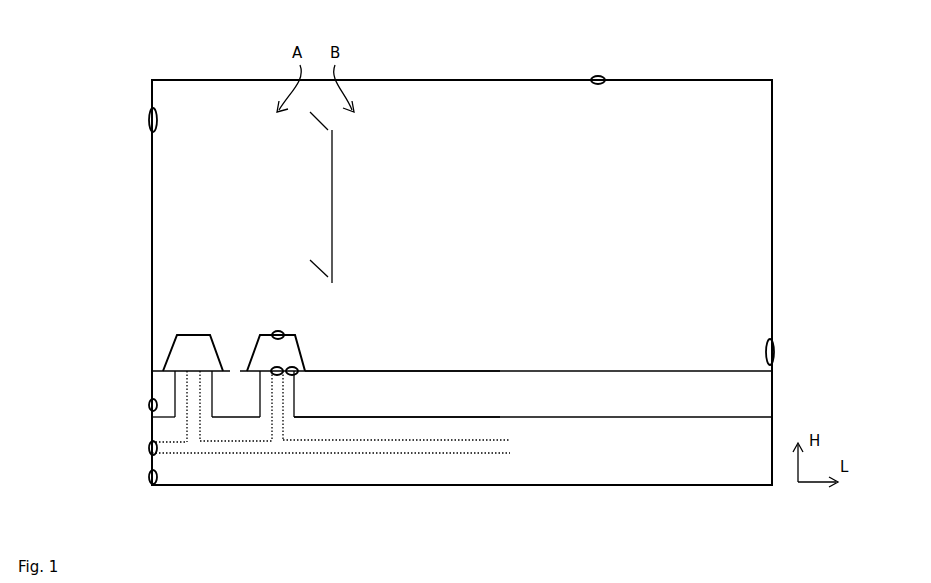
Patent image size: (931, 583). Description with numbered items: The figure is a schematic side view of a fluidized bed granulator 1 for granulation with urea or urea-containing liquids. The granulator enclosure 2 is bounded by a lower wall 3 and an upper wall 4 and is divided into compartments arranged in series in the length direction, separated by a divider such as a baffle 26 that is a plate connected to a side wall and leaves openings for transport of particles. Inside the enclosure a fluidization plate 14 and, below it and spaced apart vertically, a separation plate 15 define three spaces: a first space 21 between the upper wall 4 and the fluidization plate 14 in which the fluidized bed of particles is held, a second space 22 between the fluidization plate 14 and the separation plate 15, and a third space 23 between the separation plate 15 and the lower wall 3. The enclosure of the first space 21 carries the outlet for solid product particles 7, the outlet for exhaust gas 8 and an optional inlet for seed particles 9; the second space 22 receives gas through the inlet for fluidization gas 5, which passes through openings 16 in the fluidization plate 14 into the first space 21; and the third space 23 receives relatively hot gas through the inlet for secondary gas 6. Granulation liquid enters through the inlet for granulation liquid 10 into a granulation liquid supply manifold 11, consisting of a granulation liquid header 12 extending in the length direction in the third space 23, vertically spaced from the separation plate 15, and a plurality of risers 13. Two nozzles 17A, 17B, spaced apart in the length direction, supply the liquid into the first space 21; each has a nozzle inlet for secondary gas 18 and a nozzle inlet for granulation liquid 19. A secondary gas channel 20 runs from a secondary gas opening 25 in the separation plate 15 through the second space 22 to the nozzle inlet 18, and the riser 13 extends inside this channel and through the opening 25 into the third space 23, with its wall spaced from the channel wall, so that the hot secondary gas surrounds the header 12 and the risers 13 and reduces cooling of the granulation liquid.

The fluidized bed granulator 1 is at (192, 62).
The granulator enclosure 2 is at (553, 79).
The lower wall 3 is at (538, 490).
The upper wall 4 is at (264, 80).
The inlet for fluidization gas 5 is at (146, 403).
The inlet for secondary gas 6 is at (146, 475).
The outlet for solid product particles 7 is at (778, 350).
The outlet for exhaust gas 8 is at (596, 76).
The inlet for seed particles 9 is at (146, 122).
The inlet for granulation liquid 10 is at (146, 446).
The granulation liquid supply manifold 11 is at (178, 450).
The granulation liquid header 12 is at (252, 447).
The riser 13 is at (193, 430).
The fluidization plate 14 is at (657, 371).
The separation plate 15 is at (670, 417).
The openings 16 is at (230, 367).
The nozzle 17A is at (278, 331).
The nozzle 17B is at (196, 334).
The nozzle inlet for secondary gas 18 is at (292, 367).
The nozzle inlet for granulation liquid 19 is at (281, 367).
The secondary gas channel 20 is at (297, 374).
The first space 21 is at (402, 354).
The second space 22 is at (397, 405).
The third space 23 is at (410, 480).
The secondary gas opening 25 is at (287, 414).
The baffle 26 is at (335, 238).